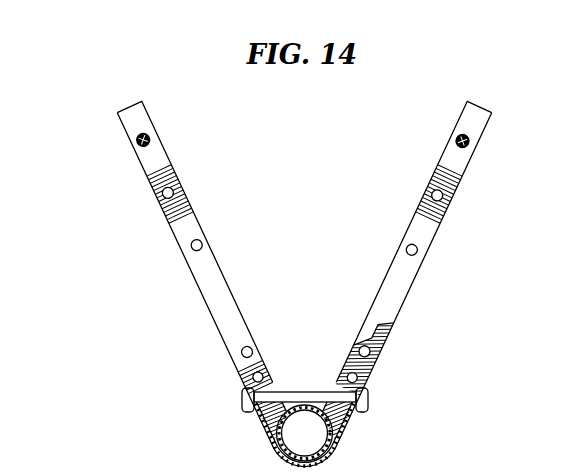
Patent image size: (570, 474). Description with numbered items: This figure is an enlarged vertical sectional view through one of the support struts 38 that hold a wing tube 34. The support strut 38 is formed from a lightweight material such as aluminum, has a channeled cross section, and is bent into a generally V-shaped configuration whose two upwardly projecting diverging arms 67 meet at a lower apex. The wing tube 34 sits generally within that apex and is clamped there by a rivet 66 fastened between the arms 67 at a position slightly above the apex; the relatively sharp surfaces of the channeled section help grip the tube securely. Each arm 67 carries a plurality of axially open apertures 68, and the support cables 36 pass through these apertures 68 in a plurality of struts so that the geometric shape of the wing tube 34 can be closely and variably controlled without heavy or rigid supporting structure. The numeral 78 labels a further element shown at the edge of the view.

The wing tube 34 is at (274, 450).
The support cable 36 is at (152, 141).
The support strut 38 is at (482, 262).
The rivet 66 is at (305, 396).
The arm 67 is at (204, 300).
The aperture 68 is at (161, 193).
The element 78 is at (546, 473).